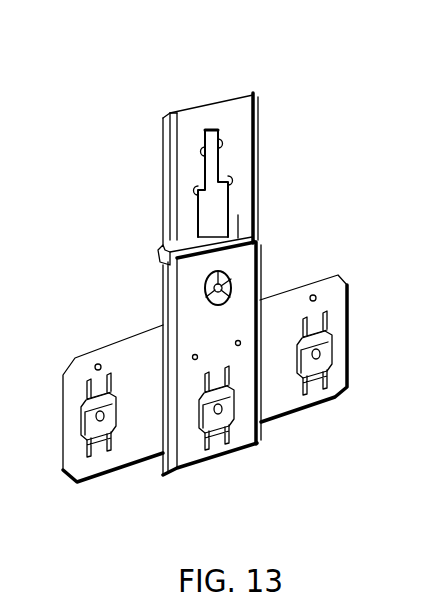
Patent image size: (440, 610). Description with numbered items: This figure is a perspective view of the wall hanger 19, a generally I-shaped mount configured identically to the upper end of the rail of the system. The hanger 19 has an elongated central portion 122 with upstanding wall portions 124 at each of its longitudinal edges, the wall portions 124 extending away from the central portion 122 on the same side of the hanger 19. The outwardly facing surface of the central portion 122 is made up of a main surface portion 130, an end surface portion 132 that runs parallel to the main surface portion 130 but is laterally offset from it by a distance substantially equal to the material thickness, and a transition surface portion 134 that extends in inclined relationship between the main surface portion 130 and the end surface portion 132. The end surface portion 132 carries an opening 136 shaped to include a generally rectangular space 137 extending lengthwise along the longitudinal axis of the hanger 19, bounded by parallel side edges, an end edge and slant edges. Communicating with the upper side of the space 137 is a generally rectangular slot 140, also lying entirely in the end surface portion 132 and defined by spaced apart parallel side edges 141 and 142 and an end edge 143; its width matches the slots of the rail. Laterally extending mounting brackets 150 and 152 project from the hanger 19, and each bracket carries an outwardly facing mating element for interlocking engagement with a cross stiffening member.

The wall hanger 19 is at (316, 110).
The central portion 122 is at (260, 240).
The wall portions 124 is at (172, 203).
The main surface portion 130 is at (195, 445).
The end surface portion 132 is at (243, 107).
The transition surface portion 134 is at (225, 205).
The opening 136 is at (192, 128).
The generally rectangular space 137 is at (229, 181).
The slot 140 is at (218, 125).
The side edge 141 is at (167, 140).
The side edge 142 is at (228, 137).
The end edge 143 is at (197, 130).
The mounting bracket 150 is at (101, 399).
The mounting bracket 152 is at (350, 316).